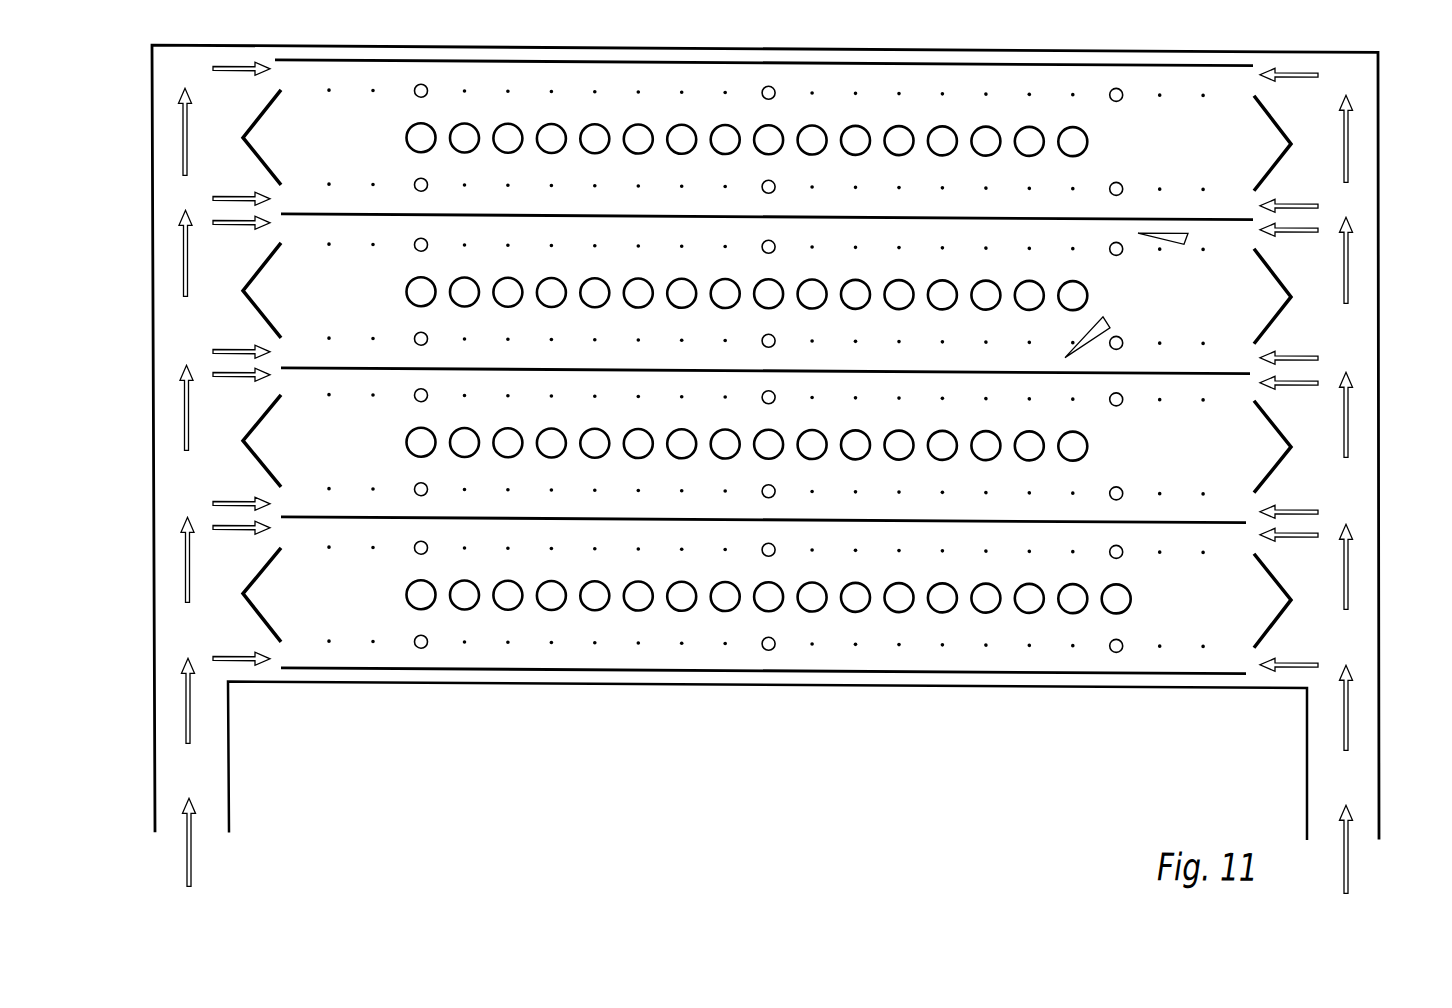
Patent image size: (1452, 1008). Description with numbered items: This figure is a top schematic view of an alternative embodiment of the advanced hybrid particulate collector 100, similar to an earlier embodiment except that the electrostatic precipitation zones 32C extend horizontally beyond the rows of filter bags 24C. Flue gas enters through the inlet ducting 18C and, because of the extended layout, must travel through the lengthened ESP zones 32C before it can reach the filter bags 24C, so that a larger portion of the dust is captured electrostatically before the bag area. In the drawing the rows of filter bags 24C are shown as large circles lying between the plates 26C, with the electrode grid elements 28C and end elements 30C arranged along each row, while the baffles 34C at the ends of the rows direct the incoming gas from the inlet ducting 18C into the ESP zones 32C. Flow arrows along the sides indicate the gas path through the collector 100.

The fluid treatment apparatus 100 is at (1385, 109).
The inlet ducting 18C is at (229, 768).
The filter bags 24C is at (899, 277).
The perforated plates 26C is at (777, 60).
The small perforations 28C is at (638, 90).
The end holes 30C is at (420, 176).
The ESP zones 32C is at (1065, 353).
The deflector baffles 34C is at (262, 163).